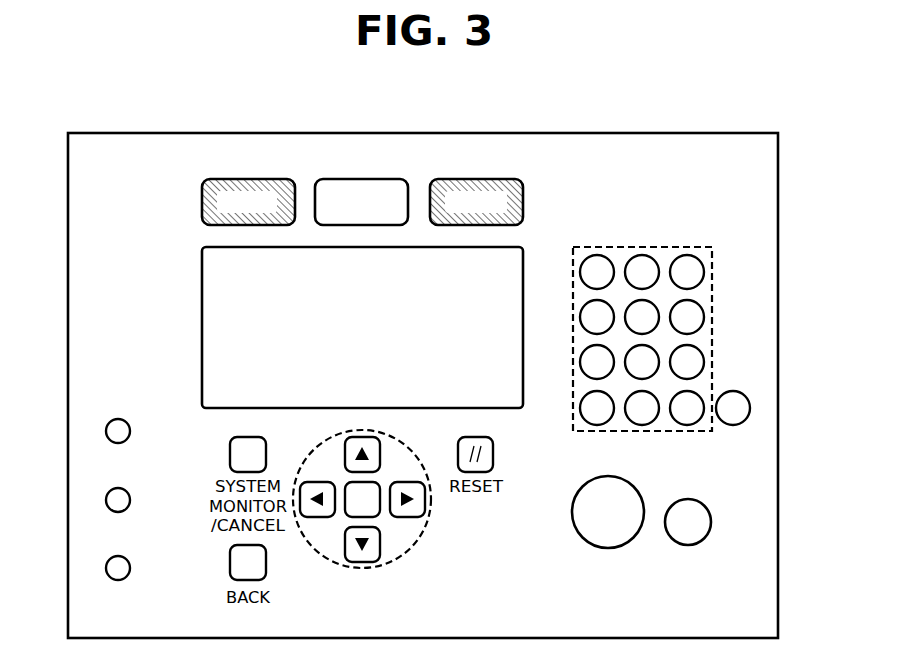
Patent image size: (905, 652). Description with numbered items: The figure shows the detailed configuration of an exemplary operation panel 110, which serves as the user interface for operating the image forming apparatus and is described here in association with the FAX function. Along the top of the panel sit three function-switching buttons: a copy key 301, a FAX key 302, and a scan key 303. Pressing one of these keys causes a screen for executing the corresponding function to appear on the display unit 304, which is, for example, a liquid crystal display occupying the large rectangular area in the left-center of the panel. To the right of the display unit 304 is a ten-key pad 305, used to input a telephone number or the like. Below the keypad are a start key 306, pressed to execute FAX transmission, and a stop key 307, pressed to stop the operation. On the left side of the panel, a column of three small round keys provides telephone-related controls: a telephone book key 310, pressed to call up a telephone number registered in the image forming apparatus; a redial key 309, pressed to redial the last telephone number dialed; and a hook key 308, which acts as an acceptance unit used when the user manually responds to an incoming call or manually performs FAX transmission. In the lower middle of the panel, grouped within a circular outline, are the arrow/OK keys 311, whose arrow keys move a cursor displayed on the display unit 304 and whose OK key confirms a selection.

The operation panel 110 is at (713, 132).
The copy key 301 is at (237, 178).
The FAX key 302 is at (350, 178).
The scan key 303 is at (460, 178).
The display unit 304 is at (202, 282).
The ten-key pad 305 is at (667, 247).
The start key 306 is at (638, 490).
The stop key 307 is at (703, 500).
The hook key 308 is at (131, 568).
The redial key 309 is at (131, 500).
The telephone book key 310 is at (131, 431).
The arrow/OK keys 311 is at (407, 439).